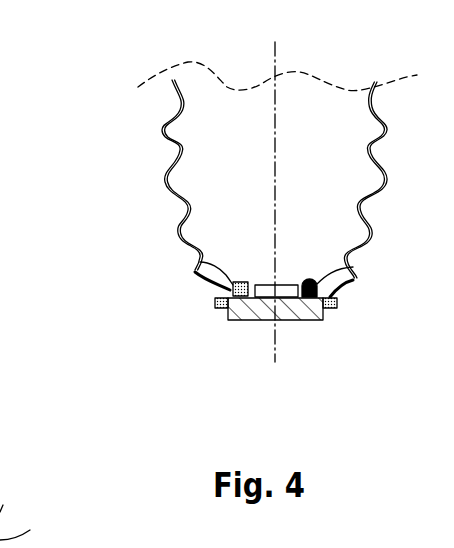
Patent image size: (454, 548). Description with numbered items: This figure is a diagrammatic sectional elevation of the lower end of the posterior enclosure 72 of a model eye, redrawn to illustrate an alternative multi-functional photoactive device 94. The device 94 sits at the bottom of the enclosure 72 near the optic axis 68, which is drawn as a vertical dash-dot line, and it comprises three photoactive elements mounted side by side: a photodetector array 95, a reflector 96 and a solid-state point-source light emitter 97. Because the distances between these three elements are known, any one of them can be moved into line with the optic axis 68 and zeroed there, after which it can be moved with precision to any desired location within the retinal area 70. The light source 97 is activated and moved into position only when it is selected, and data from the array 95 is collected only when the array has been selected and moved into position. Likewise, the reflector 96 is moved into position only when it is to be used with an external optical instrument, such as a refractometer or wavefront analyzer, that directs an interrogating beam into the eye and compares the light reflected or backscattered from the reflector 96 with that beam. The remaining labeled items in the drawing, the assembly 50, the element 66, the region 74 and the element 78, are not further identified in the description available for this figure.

The light emitting device 50 is at (110, 143).
The substrate 66 is at (248, 318).
The optic axis 68 is at (277, 53).
The retinal area 70 is at (39, 523).
The posterior enclosure 72 is at (160, 187).
The cavity 74 is at (231, 140).
The contact pads 78 is at (215, 303).
The multi-functional photoactive device 94 is at (318, 268).
The photodetector array 95 is at (290, 300).
The reflector 96 is at (196, 266).
The solid-state point-source light emitter 97 is at (346, 268).